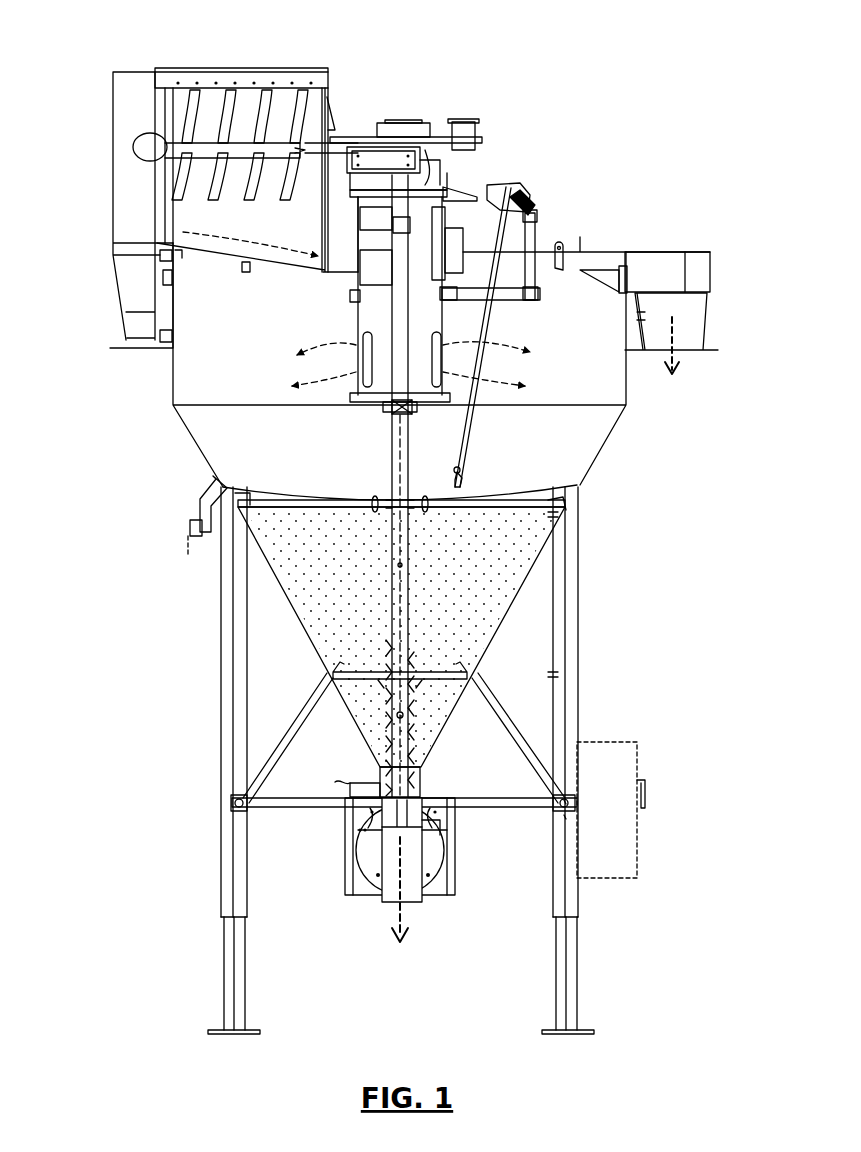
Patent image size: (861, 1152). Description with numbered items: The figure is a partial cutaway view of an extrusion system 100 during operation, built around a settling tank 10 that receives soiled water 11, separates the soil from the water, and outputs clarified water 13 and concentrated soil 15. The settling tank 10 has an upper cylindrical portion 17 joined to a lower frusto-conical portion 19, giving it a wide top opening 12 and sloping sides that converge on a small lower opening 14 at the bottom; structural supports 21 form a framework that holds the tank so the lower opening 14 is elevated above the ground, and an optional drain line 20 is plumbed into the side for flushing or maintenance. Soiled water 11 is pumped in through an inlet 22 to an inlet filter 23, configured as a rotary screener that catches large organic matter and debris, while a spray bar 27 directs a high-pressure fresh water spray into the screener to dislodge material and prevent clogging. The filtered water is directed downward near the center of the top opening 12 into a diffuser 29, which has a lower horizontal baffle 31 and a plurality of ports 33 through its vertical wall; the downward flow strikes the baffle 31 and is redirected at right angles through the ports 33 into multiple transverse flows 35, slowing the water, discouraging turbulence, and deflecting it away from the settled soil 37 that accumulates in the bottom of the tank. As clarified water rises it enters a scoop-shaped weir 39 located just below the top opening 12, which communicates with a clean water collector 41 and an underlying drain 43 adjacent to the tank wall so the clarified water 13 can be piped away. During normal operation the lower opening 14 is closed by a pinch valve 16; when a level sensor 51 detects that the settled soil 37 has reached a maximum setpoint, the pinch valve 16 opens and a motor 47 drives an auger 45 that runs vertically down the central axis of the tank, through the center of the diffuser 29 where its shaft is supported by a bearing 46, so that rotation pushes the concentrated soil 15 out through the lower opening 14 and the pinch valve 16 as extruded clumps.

The extrusion system 100 is at (430, 576).
The settling tank 10 is at (618, 150).
The soiled water 11 is at (180, 223).
The top opening 12 is at (605, 242).
The clarified water 13 is at (677, 358).
The lower opening 14 is at (380, 767).
The concentrated soil 15 is at (402, 910).
The pinch valve 16 is at (365, 870).
The upper cylindrical portion 17 is at (627, 385).
The lower frusto-conical portion 19 is at (310, 647).
The drain line 20 is at (192, 503).
The structural supports 21 is at (220, 767).
The inlet 22 is at (172, 128).
The inlet filter 23 is at (290, 67).
The spray bar 27 is at (217, 85).
The diffuser 29 is at (377, 328).
The horizontal baffle 31 is at (365, 399).
The ports 33 is at (358, 348).
The transverse flows 35 is at (297, 363).
The settled soil 37 is at (273, 490).
The weir 39 is at (595, 283).
The clean water collector 41 is at (700, 270).
The drain 43 is at (692, 317).
The auger 45 is at (390, 480).
The bearing 46 is at (420, 410).
The motor 47 is at (415, 125).
The level sensor 51 is at (468, 427).